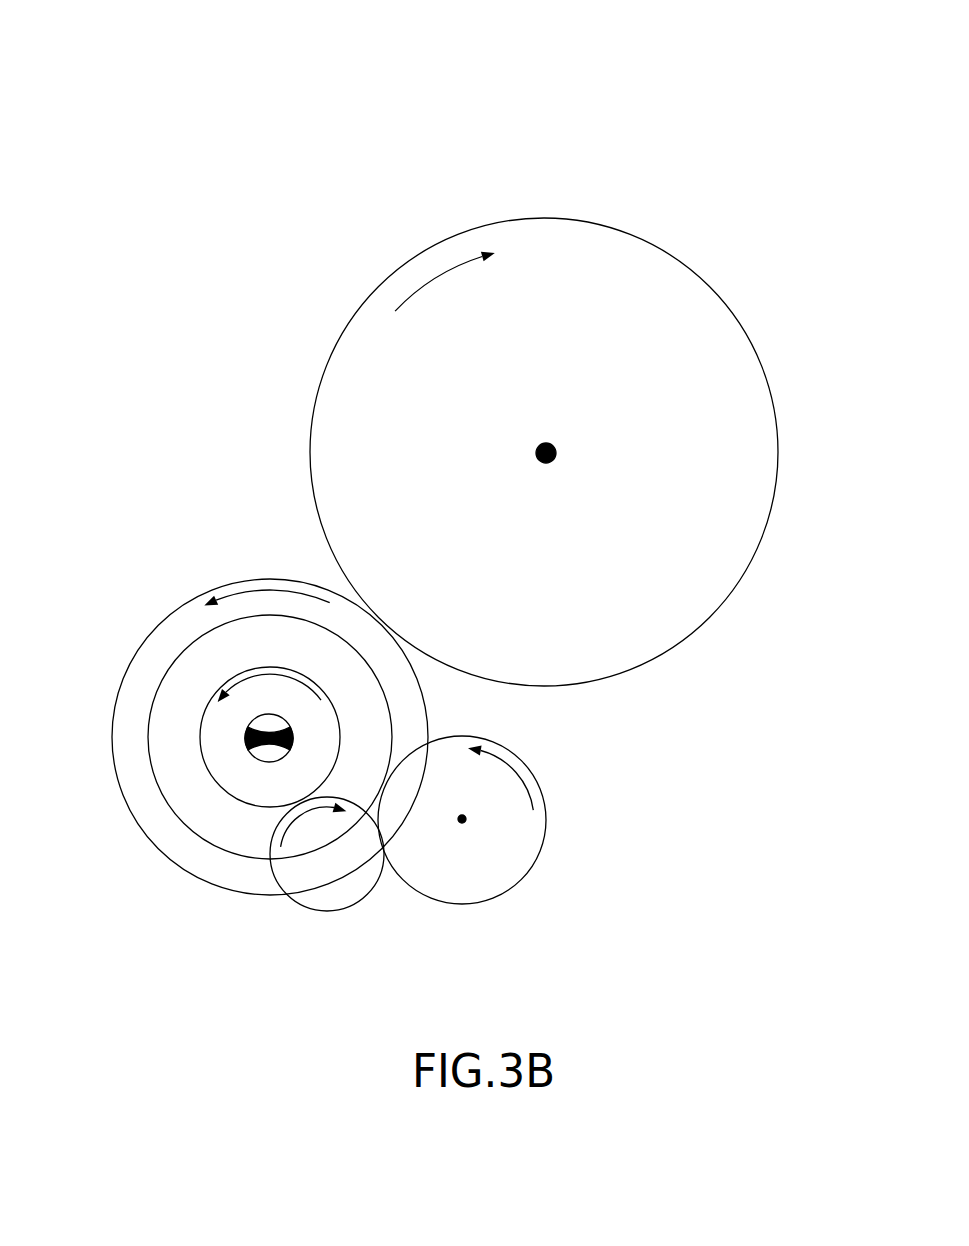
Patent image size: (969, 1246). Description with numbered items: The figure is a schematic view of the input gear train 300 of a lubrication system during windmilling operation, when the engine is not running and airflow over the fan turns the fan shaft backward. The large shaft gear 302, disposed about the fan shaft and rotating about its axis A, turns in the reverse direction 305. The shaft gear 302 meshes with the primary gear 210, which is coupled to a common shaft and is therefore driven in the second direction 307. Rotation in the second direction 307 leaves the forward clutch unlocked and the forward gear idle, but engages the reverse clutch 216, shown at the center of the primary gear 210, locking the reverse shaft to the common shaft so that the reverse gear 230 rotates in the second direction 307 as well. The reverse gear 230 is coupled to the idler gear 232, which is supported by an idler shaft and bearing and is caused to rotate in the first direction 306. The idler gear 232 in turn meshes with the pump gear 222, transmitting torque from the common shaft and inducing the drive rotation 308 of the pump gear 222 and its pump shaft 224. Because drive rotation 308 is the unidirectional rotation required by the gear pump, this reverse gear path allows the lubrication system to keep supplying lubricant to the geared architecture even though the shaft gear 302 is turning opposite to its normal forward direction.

The input gear train 300 is at (712, 124).
The shaft gear 302 is at (701, 272).
The reverse direction 305 is at (434, 282).
The axis of rotation A is at (555, 447).
The primary gear 210 is at (117, 683).
The second direction 307 is at (252, 592).
The reverse gear 230 is at (202, 763).
The reverse clutch 216 is at (293, 738).
The idler gear 232 is at (310, 912).
The first direction 306 is at (290, 823).
The pump gear 222 is at (546, 833).
The pump shaft 224 is at (466, 823).
The drive rotation 308 is at (512, 765).